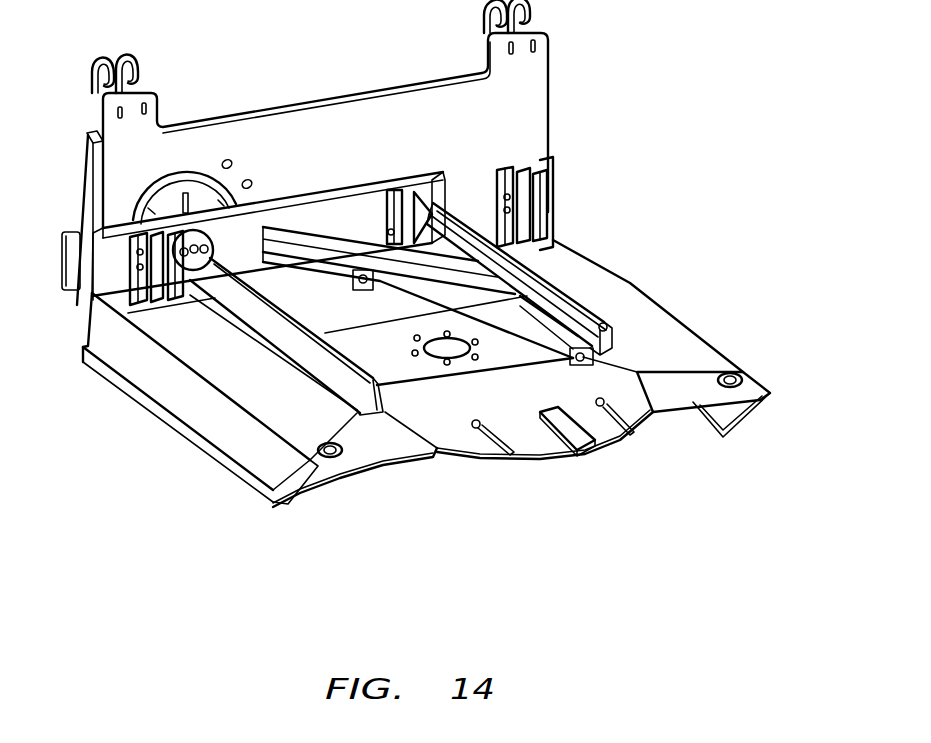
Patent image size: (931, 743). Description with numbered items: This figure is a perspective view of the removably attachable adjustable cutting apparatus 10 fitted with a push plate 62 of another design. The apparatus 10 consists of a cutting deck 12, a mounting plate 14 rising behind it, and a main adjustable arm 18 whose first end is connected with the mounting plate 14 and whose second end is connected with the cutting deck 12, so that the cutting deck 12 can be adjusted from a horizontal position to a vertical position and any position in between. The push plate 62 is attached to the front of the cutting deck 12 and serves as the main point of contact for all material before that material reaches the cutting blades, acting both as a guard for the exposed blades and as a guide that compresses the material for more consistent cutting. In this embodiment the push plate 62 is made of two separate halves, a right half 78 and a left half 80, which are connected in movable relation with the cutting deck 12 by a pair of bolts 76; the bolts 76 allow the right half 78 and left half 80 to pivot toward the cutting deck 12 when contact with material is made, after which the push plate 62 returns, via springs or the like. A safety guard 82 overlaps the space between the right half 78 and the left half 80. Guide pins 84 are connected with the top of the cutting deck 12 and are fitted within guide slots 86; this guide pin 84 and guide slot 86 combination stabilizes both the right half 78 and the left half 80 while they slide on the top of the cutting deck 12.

The removably attachable adjustable cutting apparatus 10 is at (660, 181).
The cutting deck 12 is at (643, 303).
The mounting plate 14 is at (349, 162).
The main adjustable arm 18 is at (532, 273).
The push plate 62 is at (688, 383).
The bolts 76 is at (742, 378).
The right half 78 is at (655, 425).
The left half 80 is at (530, 465).
The safety guard 82 is at (588, 458).
The guide pins 84 is at (600, 410).
The guide slots 86 is at (500, 455).